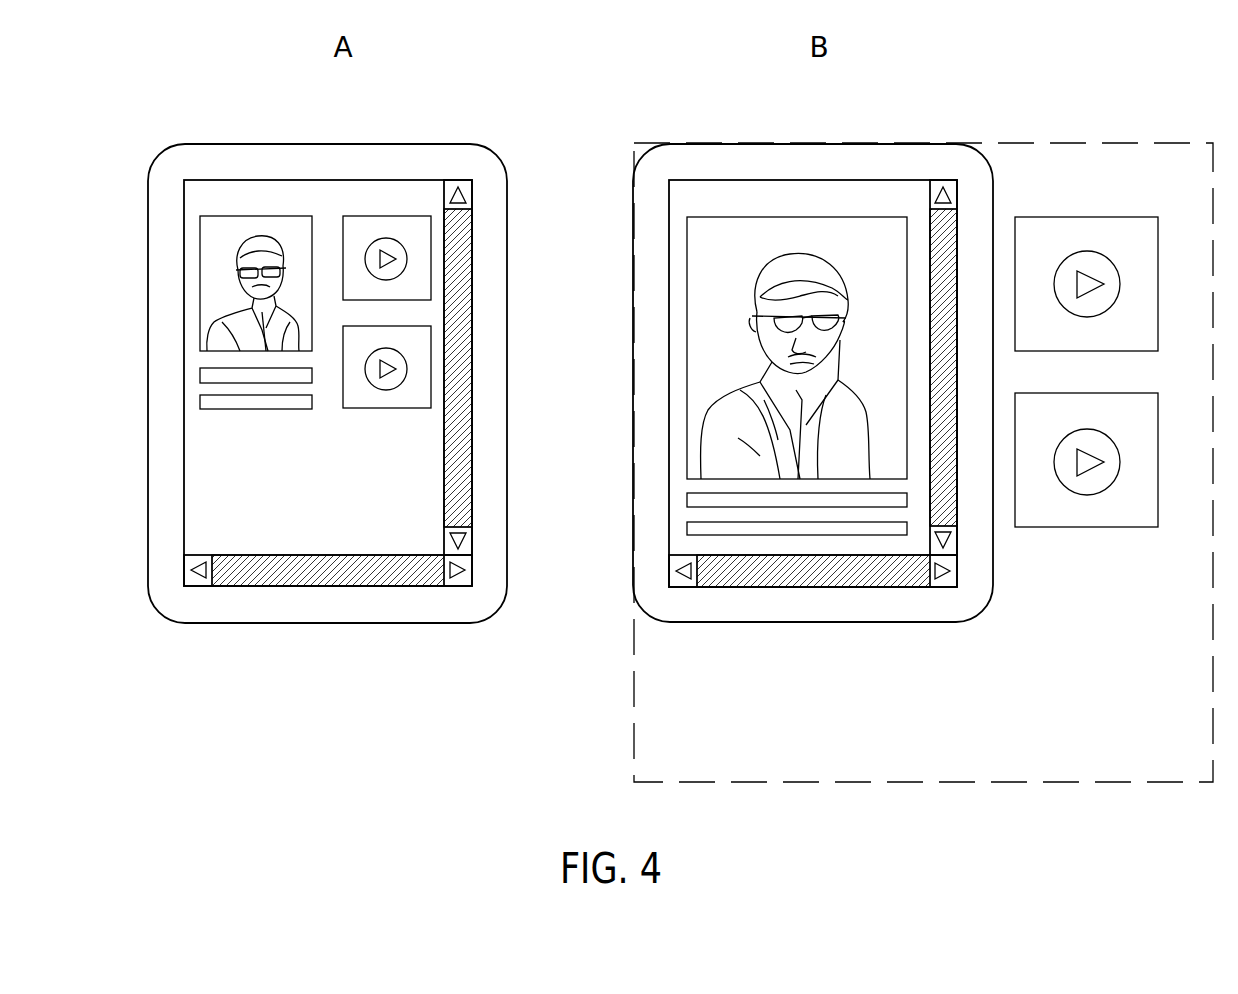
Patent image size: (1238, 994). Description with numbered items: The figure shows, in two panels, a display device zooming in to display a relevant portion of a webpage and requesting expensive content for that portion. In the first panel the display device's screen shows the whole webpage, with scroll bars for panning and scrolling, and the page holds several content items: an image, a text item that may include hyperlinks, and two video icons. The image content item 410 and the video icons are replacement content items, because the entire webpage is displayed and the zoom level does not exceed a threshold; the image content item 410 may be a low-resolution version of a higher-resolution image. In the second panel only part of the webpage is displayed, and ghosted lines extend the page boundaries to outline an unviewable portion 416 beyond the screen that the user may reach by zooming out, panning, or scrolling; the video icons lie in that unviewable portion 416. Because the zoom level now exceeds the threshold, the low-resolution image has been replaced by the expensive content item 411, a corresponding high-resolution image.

The content item 410 is at (268, 217).
The content item 411 is at (820, 217).
The unviewable portion 416 is at (693, 727).